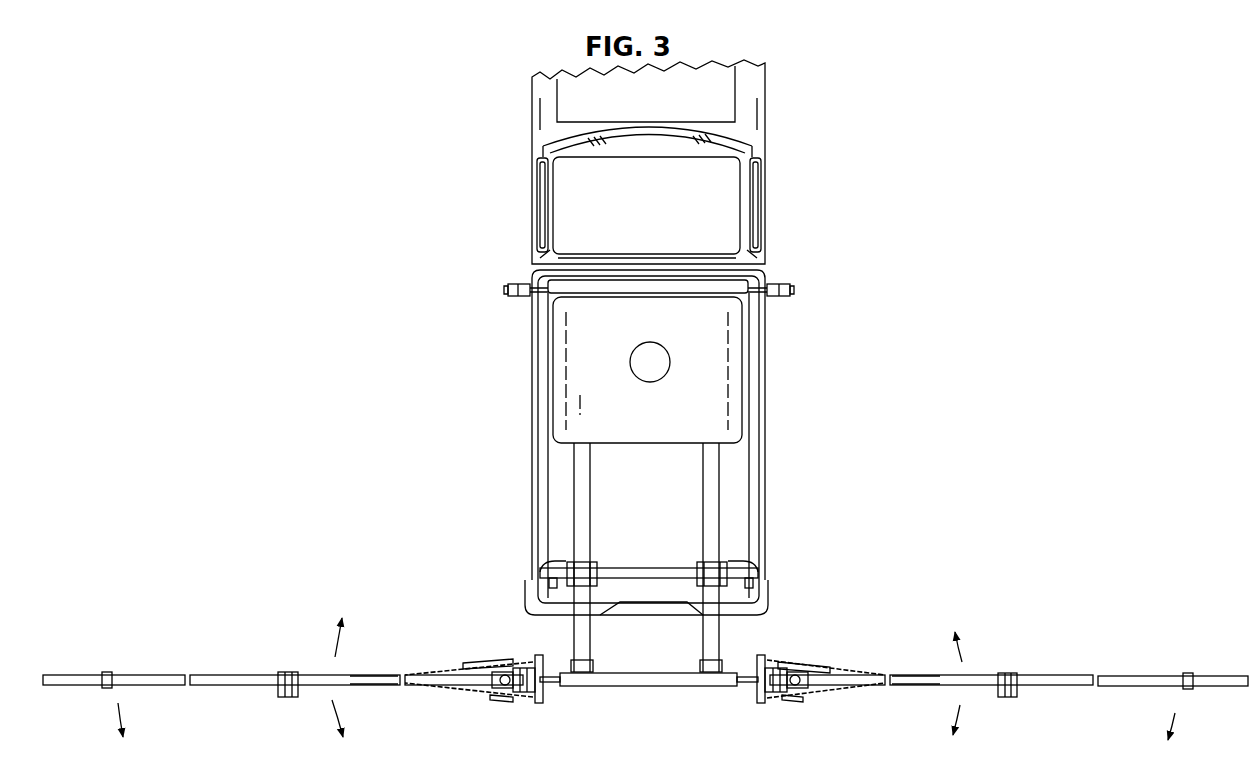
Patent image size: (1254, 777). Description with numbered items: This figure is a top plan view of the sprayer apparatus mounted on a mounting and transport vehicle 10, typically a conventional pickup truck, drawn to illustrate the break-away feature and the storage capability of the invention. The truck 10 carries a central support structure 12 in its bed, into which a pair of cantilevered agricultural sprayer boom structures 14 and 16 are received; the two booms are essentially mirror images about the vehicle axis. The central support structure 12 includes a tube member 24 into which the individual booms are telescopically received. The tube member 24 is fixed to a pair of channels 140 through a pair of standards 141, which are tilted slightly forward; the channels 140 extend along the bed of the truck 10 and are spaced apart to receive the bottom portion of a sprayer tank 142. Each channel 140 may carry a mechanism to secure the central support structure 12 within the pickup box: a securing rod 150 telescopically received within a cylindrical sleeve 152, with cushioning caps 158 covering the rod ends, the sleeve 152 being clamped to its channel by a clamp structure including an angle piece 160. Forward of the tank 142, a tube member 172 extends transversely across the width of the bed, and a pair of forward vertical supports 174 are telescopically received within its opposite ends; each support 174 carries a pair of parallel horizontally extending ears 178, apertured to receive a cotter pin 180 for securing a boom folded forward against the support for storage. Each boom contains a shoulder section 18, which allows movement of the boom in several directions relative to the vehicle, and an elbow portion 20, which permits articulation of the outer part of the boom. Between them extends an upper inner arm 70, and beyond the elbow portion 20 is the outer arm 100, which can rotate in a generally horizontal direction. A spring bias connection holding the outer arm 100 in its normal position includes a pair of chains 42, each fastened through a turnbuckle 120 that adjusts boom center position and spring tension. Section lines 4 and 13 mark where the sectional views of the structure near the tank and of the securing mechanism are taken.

The mounting and transport vehicle 10 is at (768, 192).
The central support structure 12 is at (728, 533).
The agricultural sprayer boom structure 14 is at (712, 298).
The agricultural sprayer boom structure 16 is at (973, 663).
The shoulder section 18 is at (545, 700).
The elbow portion 20 is at (280, 698).
The tube member 24 is at (647, 686).
The chain 42 is at (445, 668).
The upper inner arm 70 is at (352, 677).
The outer arm 100 is at (158, 673).
The turnbuckle 120 is at (525, 655).
The channel 140 is at (580, 623).
The standard 141 is at (590, 672).
The sprayer tank 142 is at (575, 404).
The securing rod 150 is at (555, 567).
The cylindrical sleeve 152 is at (573, 568).
The cushioning cap 158 is at (550, 585).
The angle piece 160 is at (583, 568).
The tube member 172 is at (650, 287).
The forward vertical support 174 is at (527, 296).
The ear 178 is at (510, 296).
The cotter pin 180 is at (505, 290).
The section line 4- 4 is at (502, 282).
The section line 13- 13 is at (627, 558).